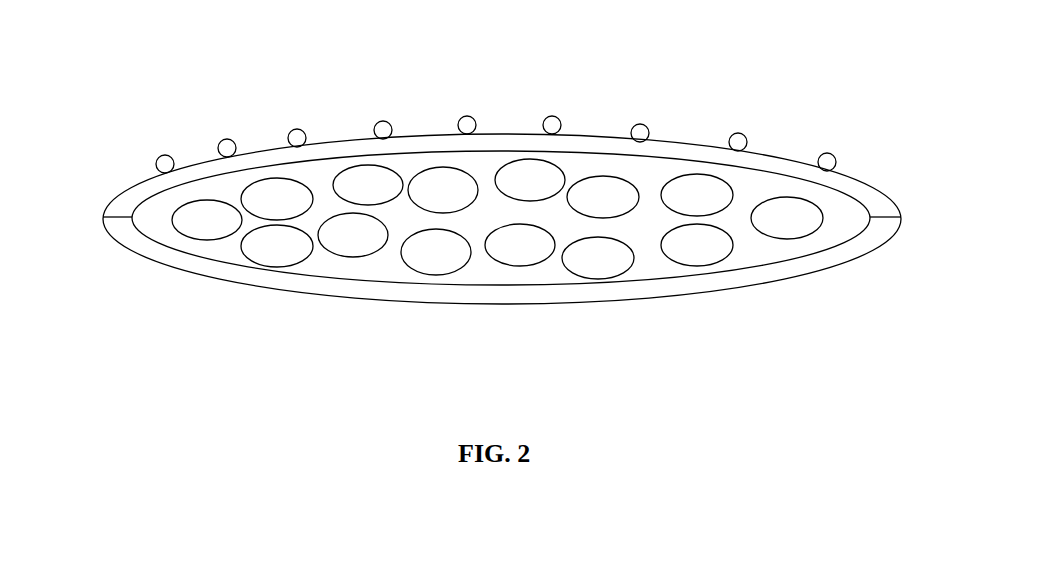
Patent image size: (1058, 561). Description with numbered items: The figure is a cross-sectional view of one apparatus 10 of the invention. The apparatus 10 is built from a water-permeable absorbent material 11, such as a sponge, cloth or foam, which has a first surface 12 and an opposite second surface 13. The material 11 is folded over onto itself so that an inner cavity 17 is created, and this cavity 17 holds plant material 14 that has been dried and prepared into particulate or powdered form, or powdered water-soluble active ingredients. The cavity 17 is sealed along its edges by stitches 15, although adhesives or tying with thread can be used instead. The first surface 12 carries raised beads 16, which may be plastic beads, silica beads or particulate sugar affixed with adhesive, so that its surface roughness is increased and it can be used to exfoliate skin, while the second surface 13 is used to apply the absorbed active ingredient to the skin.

The apparatus 10 is at (501, 203).
The water-permeable absorbent material 11 is at (763, 159).
The first surface 12 is at (867, 179).
The second surface 13 is at (809, 279).
The plant material 14 is at (515, 269).
The stitches 15 is at (111, 209).
The raised beads 16 is at (383, 119).
The inner cavity 17 is at (588, 166).